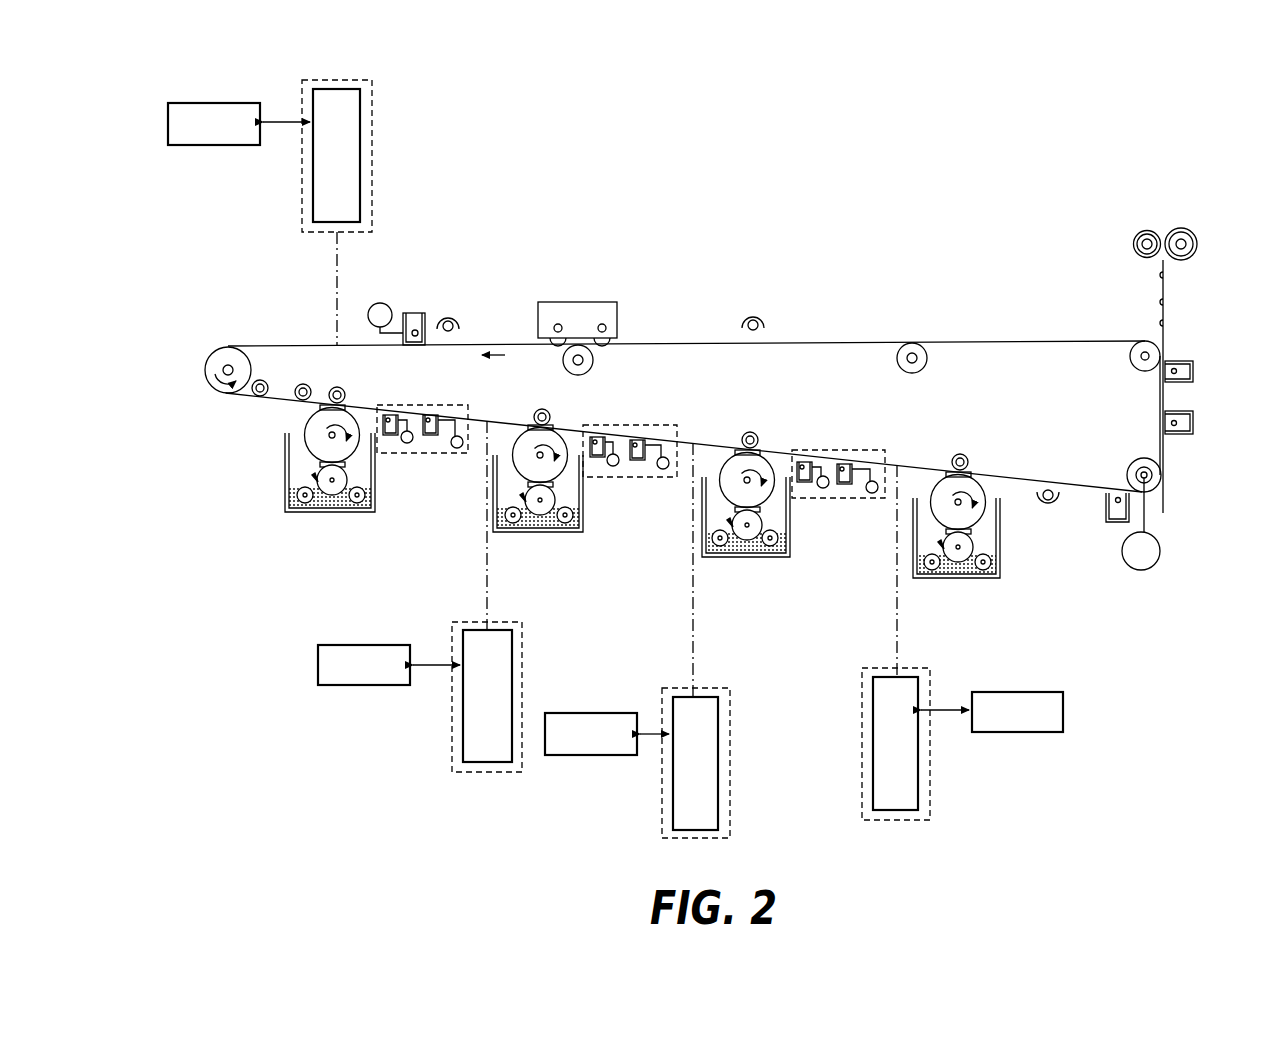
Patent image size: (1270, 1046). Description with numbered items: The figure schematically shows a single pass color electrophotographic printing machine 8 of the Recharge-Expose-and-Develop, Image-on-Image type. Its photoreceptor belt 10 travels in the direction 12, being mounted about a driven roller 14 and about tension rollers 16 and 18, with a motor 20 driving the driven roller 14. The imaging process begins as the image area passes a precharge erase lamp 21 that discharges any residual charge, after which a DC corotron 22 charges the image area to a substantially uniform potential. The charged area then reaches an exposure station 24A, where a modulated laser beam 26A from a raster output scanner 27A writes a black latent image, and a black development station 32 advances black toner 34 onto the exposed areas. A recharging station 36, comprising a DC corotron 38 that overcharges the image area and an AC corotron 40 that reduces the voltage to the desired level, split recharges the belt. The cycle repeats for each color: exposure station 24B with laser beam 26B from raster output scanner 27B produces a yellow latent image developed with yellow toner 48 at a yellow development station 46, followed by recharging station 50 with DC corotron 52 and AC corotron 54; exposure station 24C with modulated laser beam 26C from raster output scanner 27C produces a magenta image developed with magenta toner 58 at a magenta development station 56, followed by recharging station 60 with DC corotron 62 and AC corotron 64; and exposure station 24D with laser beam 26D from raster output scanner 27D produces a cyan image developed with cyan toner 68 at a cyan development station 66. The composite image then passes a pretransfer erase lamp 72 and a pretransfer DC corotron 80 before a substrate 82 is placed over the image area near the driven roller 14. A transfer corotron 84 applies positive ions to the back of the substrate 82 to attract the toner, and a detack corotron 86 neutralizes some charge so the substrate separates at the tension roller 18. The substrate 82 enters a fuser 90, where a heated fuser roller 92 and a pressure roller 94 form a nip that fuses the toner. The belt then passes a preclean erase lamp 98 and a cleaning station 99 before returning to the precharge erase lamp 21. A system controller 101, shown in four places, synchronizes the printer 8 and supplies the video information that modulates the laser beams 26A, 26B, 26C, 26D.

The electrophotographic printing machine 8 is at (890, 108).
The photoreceptor belt 10 is at (875, 342).
The direction of belt travel 12 is at (503, 357).
The driven roller 14 is at (1127, 476).
The tension roller 16 is at (214, 361).
The tension roller 18 is at (1138, 361).
The motor 20 is at (1159, 563).
The precharge erase lamp 21 is at (457, 323).
The DC corotron 22 is at (410, 313).
The exposure station 24A is at (367, 151).
The exposure station 24B is at (519, 680).
The exposure station 24C is at (723, 740).
The exposure station 24D is at (867, 724).
The modulated laser beam 26A is at (337, 257).
The laser beam 26B is at (487, 587).
The modulated laser beam 26C is at (693, 622).
The laser beam 26D is at (897, 597).
The raster output scanner 27A is at (367, 157).
The raster output scanner 27B is at (513, 695).
The raster output scanner 27C is at (720, 765).
The raster output scanner 27D is at (873, 747).
The black development station 32 is at (330, 489).
The black toner 34 is at (322, 512).
The recharging station 36 is at (422, 430).
The DC corotron 38 is at (398, 406).
The AC corotron 40 is at (429, 452).
The yellow development station 46 is at (538, 511).
The yellow toner 48 is at (530, 531).
The recharging station 50 is at (630, 454).
The DC corotron 52 is at (604, 428).
The AC corotron 54 is at (643, 479).
The magenta development station 56 is at (746, 533).
The magenta toner 58 is at (741, 555).
The recharging station 60 is at (838, 476).
The DC corotron 62 is at (813, 453).
The AC corotron 64 is at (857, 499).
The cyan development station 66 is at (968, 554).
The cyan toner 68 is at (959, 576).
The pretransfer erase lamp 72 is at (1052, 510).
The pretransfer DC corotron 80 is at (1113, 524).
The substrate 82 is at (1165, 495).
The transfer corotron 84 is at (1193, 418).
The detack corotron 86 is at (1193, 362).
The fuser 90 is at (1141, 217).
The heated fuser roller 92 is at (1132, 236).
The pressure roller 94 is at (1197, 237).
The preclean erase lamp 98 is at (757, 313).
The cleaning station 99 is at (568, 305).
The system controller 101 is at (185, 103).